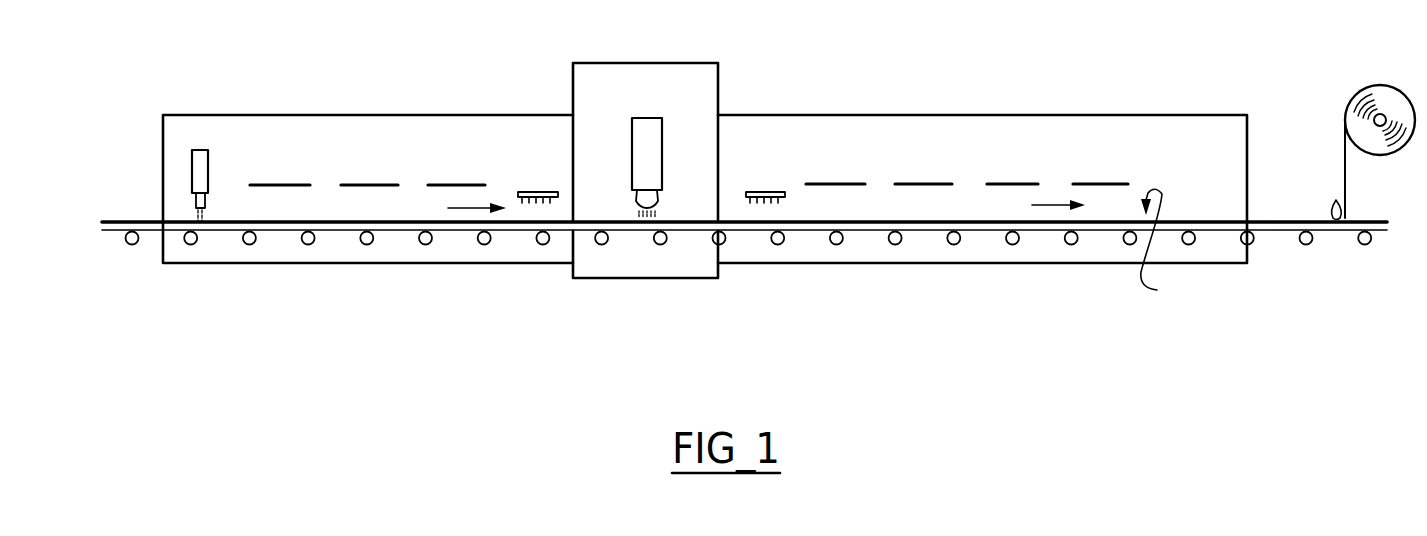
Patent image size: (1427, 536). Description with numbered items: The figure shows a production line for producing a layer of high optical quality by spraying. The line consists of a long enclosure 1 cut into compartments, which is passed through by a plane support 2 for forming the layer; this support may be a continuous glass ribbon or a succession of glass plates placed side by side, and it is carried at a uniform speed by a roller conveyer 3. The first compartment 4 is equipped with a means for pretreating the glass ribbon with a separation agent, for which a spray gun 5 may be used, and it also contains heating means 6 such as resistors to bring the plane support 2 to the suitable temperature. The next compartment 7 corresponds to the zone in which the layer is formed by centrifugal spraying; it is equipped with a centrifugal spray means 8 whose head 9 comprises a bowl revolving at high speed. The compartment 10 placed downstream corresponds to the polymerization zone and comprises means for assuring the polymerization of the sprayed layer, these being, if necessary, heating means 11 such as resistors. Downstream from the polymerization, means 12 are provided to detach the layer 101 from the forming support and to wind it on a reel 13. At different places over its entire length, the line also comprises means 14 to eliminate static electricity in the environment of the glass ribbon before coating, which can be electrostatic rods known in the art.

The enclosure 1 is at (705, 160).
The plane support 2 is at (279, 245).
The roller conveyer 3 is at (425, 244).
The compartment 4 is at (276, 130).
The spray gun 5 is at (200, 160).
The heating means 6 is at (296, 185).
The compartment 7 is at (698, 77).
The centrifugal spray means 8 is at (651, 158).
The head 9 is at (660, 200).
The compartment 10 is at (958, 130).
The heating means 11 is at (1085, 184).
The detaching means 12 is at (1333, 200).
The reel 13 is at (1375, 88).
The static electricity eliminating means 14 is at (537, 190).
The layer 101 is at (1165, 247).